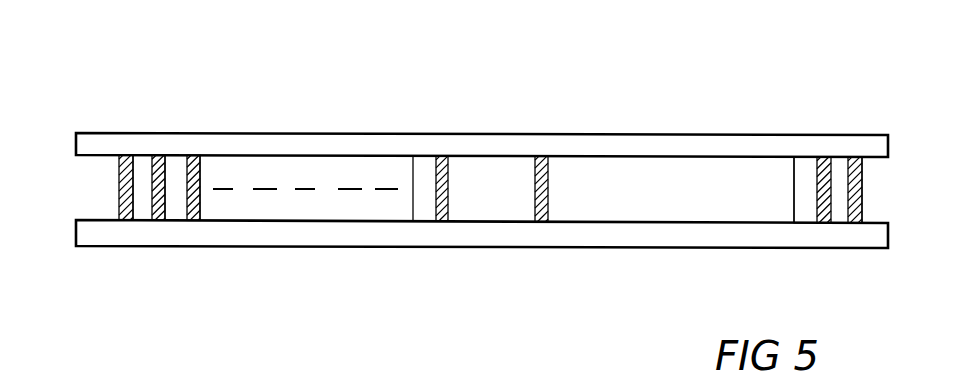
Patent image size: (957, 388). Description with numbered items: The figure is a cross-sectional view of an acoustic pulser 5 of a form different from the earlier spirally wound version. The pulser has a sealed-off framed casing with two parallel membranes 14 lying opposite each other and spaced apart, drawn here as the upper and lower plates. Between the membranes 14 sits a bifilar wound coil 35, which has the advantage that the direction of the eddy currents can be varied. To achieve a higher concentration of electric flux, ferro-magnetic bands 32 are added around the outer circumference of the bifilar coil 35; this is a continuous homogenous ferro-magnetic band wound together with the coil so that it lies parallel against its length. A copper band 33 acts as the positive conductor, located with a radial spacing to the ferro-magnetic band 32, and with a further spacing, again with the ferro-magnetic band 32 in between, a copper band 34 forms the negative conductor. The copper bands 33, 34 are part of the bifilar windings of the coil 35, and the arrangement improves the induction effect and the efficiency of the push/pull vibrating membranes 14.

The magnetic coupling assembly 5 is at (549, 125).
The membranes 14 is at (184, 136).
The ferro-magnetic band 32 is at (842, 157).
The copper band 33 is at (821, 221).
The copper band 34 is at (857, 208).
The bifilar coil 35 is at (331, 182).